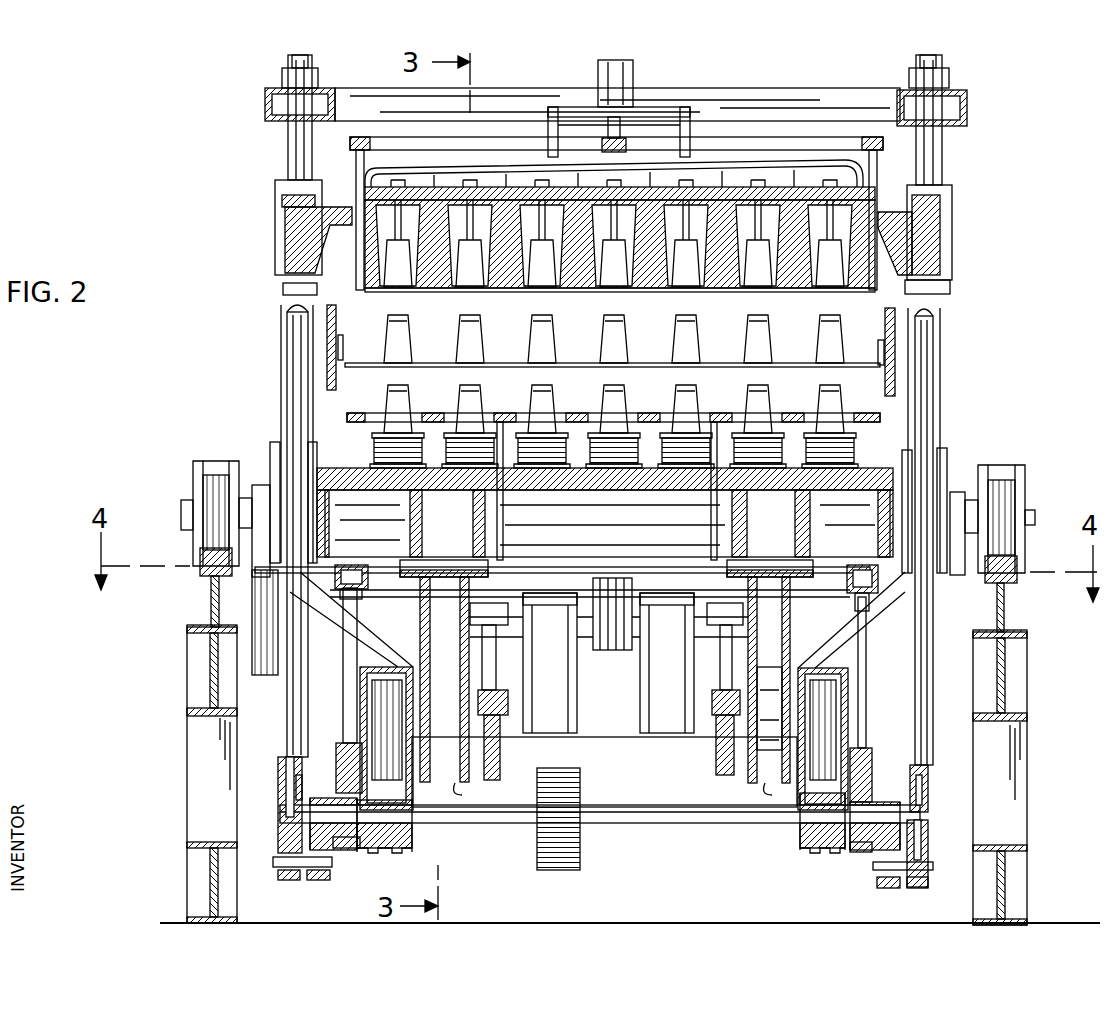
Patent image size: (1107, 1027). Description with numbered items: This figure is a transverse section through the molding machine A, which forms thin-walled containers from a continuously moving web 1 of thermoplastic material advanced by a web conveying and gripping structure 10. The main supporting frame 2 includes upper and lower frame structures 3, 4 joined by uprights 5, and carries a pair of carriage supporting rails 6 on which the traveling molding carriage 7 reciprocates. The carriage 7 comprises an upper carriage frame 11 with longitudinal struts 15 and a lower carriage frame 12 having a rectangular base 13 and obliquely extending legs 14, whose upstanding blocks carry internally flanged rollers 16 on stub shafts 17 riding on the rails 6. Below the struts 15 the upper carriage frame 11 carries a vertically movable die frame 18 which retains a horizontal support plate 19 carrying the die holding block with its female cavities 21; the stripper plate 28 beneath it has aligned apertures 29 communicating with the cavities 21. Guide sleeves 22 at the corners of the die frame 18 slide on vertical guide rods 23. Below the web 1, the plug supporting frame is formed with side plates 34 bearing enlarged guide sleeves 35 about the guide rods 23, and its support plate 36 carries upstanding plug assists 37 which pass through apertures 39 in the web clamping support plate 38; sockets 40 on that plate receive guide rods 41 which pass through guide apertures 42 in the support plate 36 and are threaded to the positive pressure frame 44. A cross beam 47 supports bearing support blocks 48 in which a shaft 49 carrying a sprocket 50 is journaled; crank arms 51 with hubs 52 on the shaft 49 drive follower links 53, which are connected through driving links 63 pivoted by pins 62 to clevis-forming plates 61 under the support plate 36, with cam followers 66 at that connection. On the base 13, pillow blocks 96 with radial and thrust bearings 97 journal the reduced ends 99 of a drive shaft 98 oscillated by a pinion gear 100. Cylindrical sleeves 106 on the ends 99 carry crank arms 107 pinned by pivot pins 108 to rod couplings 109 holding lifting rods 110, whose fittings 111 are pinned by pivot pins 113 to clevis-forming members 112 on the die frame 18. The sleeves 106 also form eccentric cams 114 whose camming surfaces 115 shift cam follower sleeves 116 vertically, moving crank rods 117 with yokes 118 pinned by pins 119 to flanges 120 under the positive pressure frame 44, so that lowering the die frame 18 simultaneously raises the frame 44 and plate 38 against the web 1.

The web 1 is at (645, 368).
The main supporting frame 2 is at (187, 740).
The upper frame structure 3 is at (187, 680).
The lower frame structure 4 is at (190, 885).
The uprights 5 is at (195, 778).
The carriage supporting rails 6 is at (211, 590).
The traveling molding carriage 7 is at (735, 839).
The web conveying and gripping structure 10 is at (893, 380).
The upper carriage frame 11 is at (958, 216).
The lower carriage frame 12 is at (893, 450).
The base 13 is at (652, 785).
The legs 14 is at (252, 600).
The struts 15 is at (702, 100).
The internally flanged rollers 16 is at (197, 463).
The stub shafts 17 is at (182, 515).
The die frame 18 is at (752, 160).
The support plate 19 is at (490, 187).
The cavities 21 is at (392, 285).
The guide sleeves 22 is at (278, 195).
The guide rods 23 is at (290, 160).
The stripper plate 28 is at (512, 290).
The apertures 29 is at (598, 290).
The side plates 34 is at (325, 468).
The guide sleeves 35 is at (270, 452).
The support plate 36 is at (620, 490).
The plug assists 37 is at (455, 395).
The web clamping support plate 38 is at (348, 413).
The apertures 39 is at (500, 413).
The sockets 40 is at (714, 413).
The guide rods 41 is at (495, 540).
The guide apertures 42 is at (677, 492).
The positive pressure frame 44 is at (595, 567).
The cross beam 47 is at (500, 810).
The bearing support blocks 48 is at (562, 650).
The shaft 49 is at (600, 640).
The sprocket 50 is at (610, 650).
The crank arms 51 is at (480, 650).
The hubs 52 is at (492, 652).
The follower links 53 is at (462, 785).
The clevis-forming plates 61 is at (485, 520).
The pivot pins 62 is at (490, 575).
The driving links 63 is at (420, 640).
The cam followers 66 is at (497, 830).
The pillow blocks 96 is at (395, 852).
The radial and thrust bearings 97 is at (415, 835).
The drive shaft 98 is at (655, 825).
The diametrally reduced ends 99 is at (330, 812).
The pinion gear 100 is at (565, 870).
The cylindrical sleeves 106 is at (290, 792).
The crank arms 107 is at (300, 883).
The pivot pins 108 is at (280, 868).
The rod couplings 109 is at (283, 836).
The lifting rods 110 is at (287, 370).
The fittings 111 is at (935, 312).
The clevis-forming members 112 is at (285, 300).
The pivot pins 113 is at (283, 290).
The cams 114 is at (348, 850).
The camming surfaces 115 is at (928, 775).
The cam follower sleeves 116 is at (360, 848).
The crank rods 117 is at (343, 735).
The yokes 118 is at (858, 620).
The pins 119 is at (362, 600).
The flanges 120 is at (368, 585).
The molding machine A is at (1000, 252).